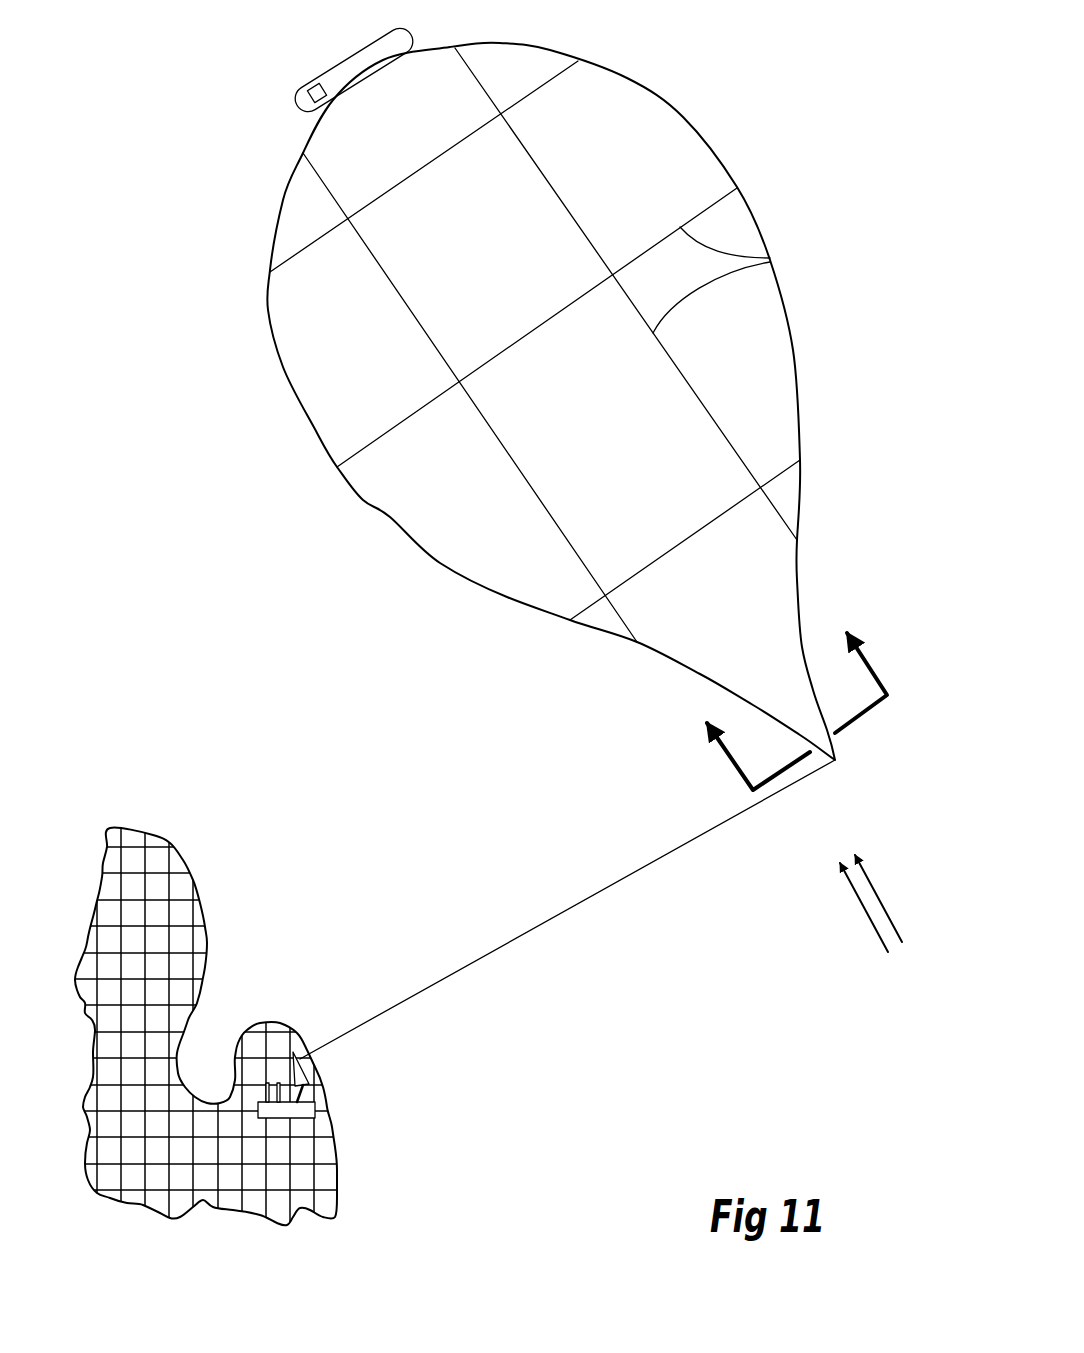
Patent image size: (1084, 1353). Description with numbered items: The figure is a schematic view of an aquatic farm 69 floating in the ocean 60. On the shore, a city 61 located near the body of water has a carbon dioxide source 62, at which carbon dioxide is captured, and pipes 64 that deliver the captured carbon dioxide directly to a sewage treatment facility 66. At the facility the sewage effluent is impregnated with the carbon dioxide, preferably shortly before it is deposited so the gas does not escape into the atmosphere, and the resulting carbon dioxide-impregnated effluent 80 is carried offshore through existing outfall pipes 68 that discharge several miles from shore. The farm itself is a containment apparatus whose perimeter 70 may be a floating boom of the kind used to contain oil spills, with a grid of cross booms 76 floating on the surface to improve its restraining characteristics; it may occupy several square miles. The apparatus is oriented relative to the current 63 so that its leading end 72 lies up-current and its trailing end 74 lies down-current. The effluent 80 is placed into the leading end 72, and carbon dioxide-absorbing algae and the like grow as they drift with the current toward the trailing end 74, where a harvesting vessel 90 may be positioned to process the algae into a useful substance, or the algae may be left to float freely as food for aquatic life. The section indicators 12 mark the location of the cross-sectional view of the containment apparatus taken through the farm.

The section line 12- 12 is at (777, 684).
The ocean 60 is at (305, 624).
The city 61 is at (253, 1152).
The carbon dioxide source 62 is at (297, 1112).
The current 63 is at (872, 925).
The pipes 64 is at (308, 1093).
The sewage treatment facility 66 is at (306, 1052).
The outfall pipes 68 is at (568, 925).
The aquatic farm 69 is at (521, 394).
The perimeter 70 is at (687, 122).
The leading end 72 is at (838, 760).
The trailing end 74 is at (407, 57).
The cross booms 76 is at (775, 257).
The carbon dioxide-impregnated effluent 80 is at (610, 92).
The harvesting vessel 90 is at (343, 68).